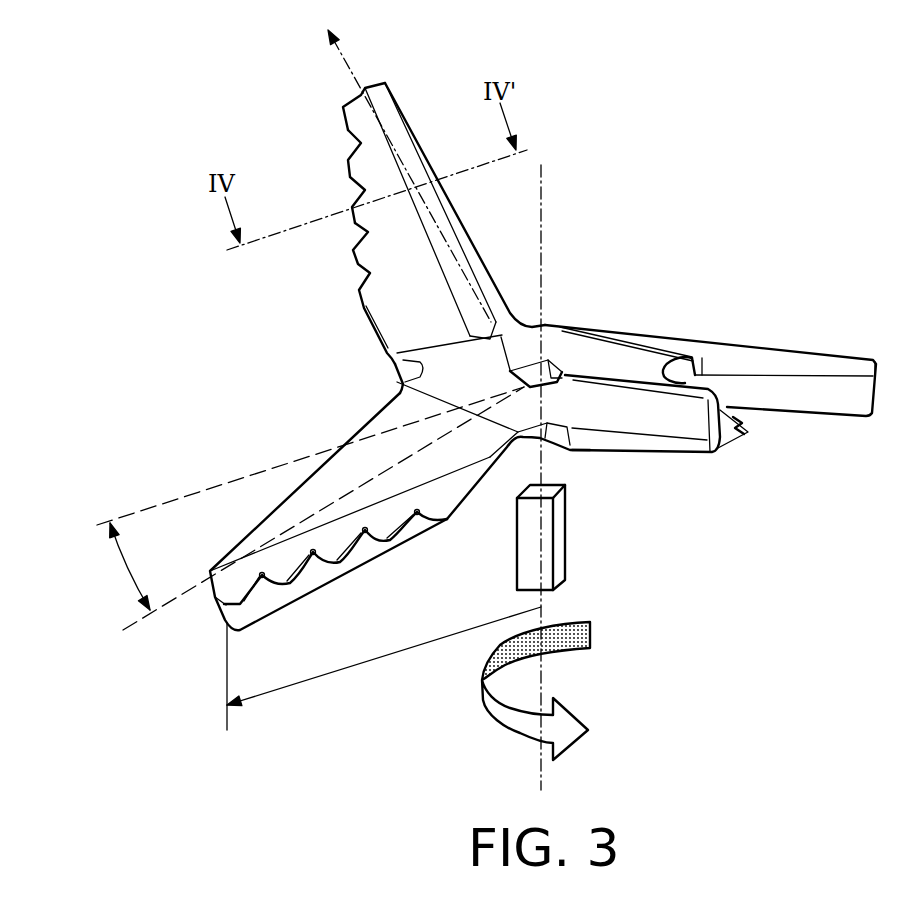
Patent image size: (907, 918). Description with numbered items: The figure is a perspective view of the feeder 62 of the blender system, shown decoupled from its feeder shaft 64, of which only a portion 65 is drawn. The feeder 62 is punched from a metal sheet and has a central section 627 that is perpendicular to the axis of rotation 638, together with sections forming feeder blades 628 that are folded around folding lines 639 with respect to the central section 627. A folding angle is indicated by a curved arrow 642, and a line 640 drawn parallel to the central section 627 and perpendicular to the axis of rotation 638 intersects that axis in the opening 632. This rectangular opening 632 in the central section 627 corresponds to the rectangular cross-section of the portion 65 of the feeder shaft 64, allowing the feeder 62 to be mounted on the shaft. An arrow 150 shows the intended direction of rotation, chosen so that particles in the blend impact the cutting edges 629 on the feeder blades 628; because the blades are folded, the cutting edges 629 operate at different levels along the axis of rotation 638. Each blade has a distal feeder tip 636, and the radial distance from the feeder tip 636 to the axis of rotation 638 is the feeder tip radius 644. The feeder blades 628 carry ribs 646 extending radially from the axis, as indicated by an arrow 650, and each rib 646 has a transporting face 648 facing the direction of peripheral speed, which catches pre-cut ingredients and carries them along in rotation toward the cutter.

The feeder 62 is at (694, 136).
The central section 627 is at (558, 346).
The feeder blade 628 is at (393, 267).
The cutting edge 629 is at (360, 183).
The opening 632 is at (563, 375).
The feeder tip 636 is at (253, 620).
The axis of rotation 638 is at (545, 178).
The folding line 639 is at (407, 357).
The line 640 is at (180, 497).
The folding angle 642 is at (120, 570).
The feeder tip radius 644 is at (377, 658).
The rib 646 is at (390, 108).
The transporting face 648 is at (370, 118).
The arrow 650 is at (347, 54).
The feeder shaft 64 is at (604, 537).
The portion 65 is at (558, 532).
The arrow 150 is at (483, 700).